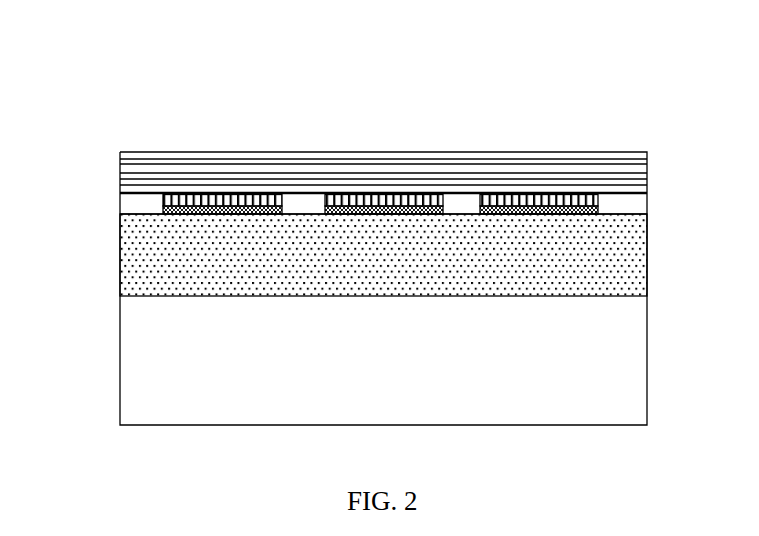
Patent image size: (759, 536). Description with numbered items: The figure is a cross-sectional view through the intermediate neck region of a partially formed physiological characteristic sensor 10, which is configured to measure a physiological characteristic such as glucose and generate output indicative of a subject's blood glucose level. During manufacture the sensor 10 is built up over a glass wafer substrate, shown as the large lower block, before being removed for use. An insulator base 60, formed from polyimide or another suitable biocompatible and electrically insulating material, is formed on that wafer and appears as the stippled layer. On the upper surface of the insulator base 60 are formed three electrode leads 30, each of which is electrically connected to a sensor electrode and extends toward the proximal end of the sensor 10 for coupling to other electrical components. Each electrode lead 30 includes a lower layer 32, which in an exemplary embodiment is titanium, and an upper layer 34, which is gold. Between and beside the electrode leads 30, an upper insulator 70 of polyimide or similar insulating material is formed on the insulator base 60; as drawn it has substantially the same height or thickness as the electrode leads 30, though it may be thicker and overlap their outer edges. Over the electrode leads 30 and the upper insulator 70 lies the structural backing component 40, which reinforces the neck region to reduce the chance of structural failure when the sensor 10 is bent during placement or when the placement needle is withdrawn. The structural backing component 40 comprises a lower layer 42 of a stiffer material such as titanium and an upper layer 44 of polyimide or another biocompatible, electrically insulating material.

The physiological characteristic sensor 10 is at (90, 154).
The electrode lead 30 is at (338, 203).
The lower layer 32 is at (362, 212).
The upper layer 34 is at (410, 203).
The structural backing component 40 is at (493, 175).
The lower layer 42 is at (543, 188).
The upper layer 44 is at (597, 158).
The insulator base 60 is at (623, 273).
The upper insulator 70 is at (635, 205).